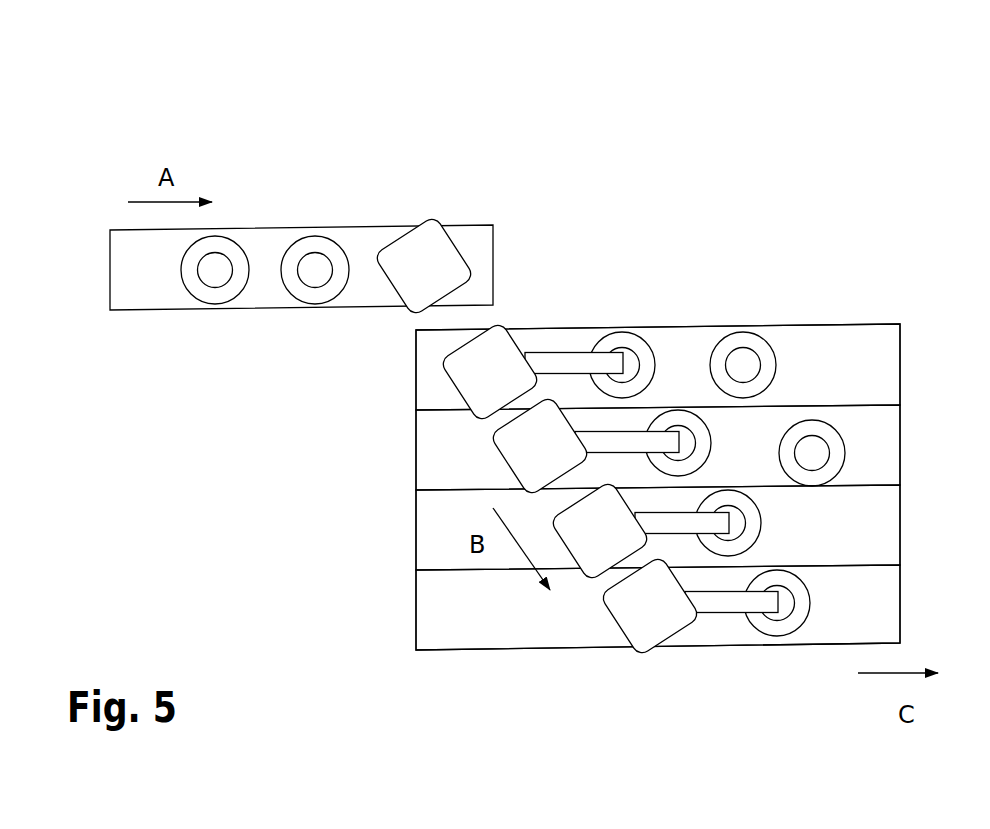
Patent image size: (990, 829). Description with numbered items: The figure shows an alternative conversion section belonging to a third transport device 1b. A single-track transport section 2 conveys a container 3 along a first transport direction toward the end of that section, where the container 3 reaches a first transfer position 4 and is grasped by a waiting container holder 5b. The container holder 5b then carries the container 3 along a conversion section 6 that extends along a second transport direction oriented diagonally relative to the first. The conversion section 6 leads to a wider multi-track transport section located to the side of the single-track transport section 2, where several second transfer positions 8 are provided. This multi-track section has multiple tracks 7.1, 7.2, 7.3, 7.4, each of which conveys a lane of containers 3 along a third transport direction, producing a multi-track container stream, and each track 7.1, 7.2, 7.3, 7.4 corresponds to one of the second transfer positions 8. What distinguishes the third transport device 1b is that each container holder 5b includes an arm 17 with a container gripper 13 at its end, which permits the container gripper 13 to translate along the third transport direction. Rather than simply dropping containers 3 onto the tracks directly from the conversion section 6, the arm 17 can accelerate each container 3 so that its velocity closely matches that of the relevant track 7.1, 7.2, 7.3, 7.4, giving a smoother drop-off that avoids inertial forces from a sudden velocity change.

The third transport device 1b is at (663, 173).
The single-track transport section 2 is at (168, 310).
The container 3 is at (307, 303).
The first transfer position 4 is at (468, 238).
The container holder 5b is at (413, 248).
The conversion section 6 is at (580, 610).
The track 7.1 is at (423, 378).
The track 7.2 is at (430, 455).
The track 7.3 is at (430, 525).
The track 7.4 is at (460, 607).
The second transfer position 8 is at (677, 348).
The container gripper 13 is at (623, 349).
The arm 17 is at (565, 362).